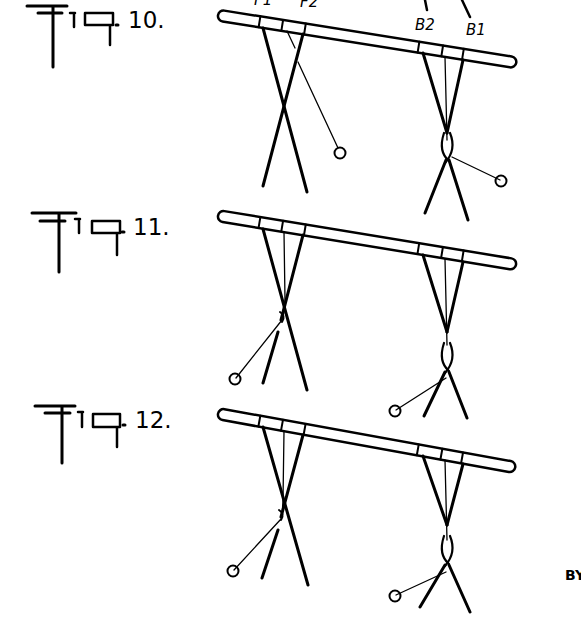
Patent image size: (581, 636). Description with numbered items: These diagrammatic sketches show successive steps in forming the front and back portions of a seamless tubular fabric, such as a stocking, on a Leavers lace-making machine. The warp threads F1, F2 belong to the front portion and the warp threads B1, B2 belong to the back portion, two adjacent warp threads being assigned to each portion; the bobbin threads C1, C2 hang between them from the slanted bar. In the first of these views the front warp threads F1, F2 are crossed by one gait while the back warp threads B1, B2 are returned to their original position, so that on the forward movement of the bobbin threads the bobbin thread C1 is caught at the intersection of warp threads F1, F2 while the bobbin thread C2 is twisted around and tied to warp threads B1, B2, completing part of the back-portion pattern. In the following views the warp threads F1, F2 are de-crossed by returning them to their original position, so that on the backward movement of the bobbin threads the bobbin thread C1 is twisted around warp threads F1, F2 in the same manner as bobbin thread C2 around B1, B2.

In FIG. 10, the warp thread of the front portion F1 is at (288, 119).
In FIG. 11, the warp thread of the front portion F1 is at (288, 321).
In FIG. 12, the warp thread of the front portion F1 is at (274, 520).
In FIG. 10, the warp thread of the front portion F2 is at (276, 121).
In FIG. 11, the warp thread of the front portion F2 is at (276, 323).
In FIG. 12, the warp thread of the front portion F2 is at (289, 518).
In FIG. 10, the warp thread of the back portion B1 is at (437, 146).
In FIG. 11, the warp thread of the back portion B1 is at (435, 349).
In FIG. 12, the warp thread of the back portion B1 is at (456, 543).
In FIG. 10, the warp thread of the back portion B2 is at (454, 144).
In FIG. 11, the warp thread of the back portion B2 is at (451, 349).
In FIG. 12, the warp thread of the back portion B2 is at (428, 545).
In FIG. 10, the bobbin thread C1 is at (326, 122).
In FIG. 11, the bobbin thread C1 is at (257, 354).
In FIG. 12, the bobbin thread C1 is at (252, 548).
In FIG. 10, the bobbin thread C2 is at (478, 167).
In FIG. 11, the bobbin thread C2 is at (414, 393).
In FIG. 12, the bobbin thread C2 is at (413, 593).